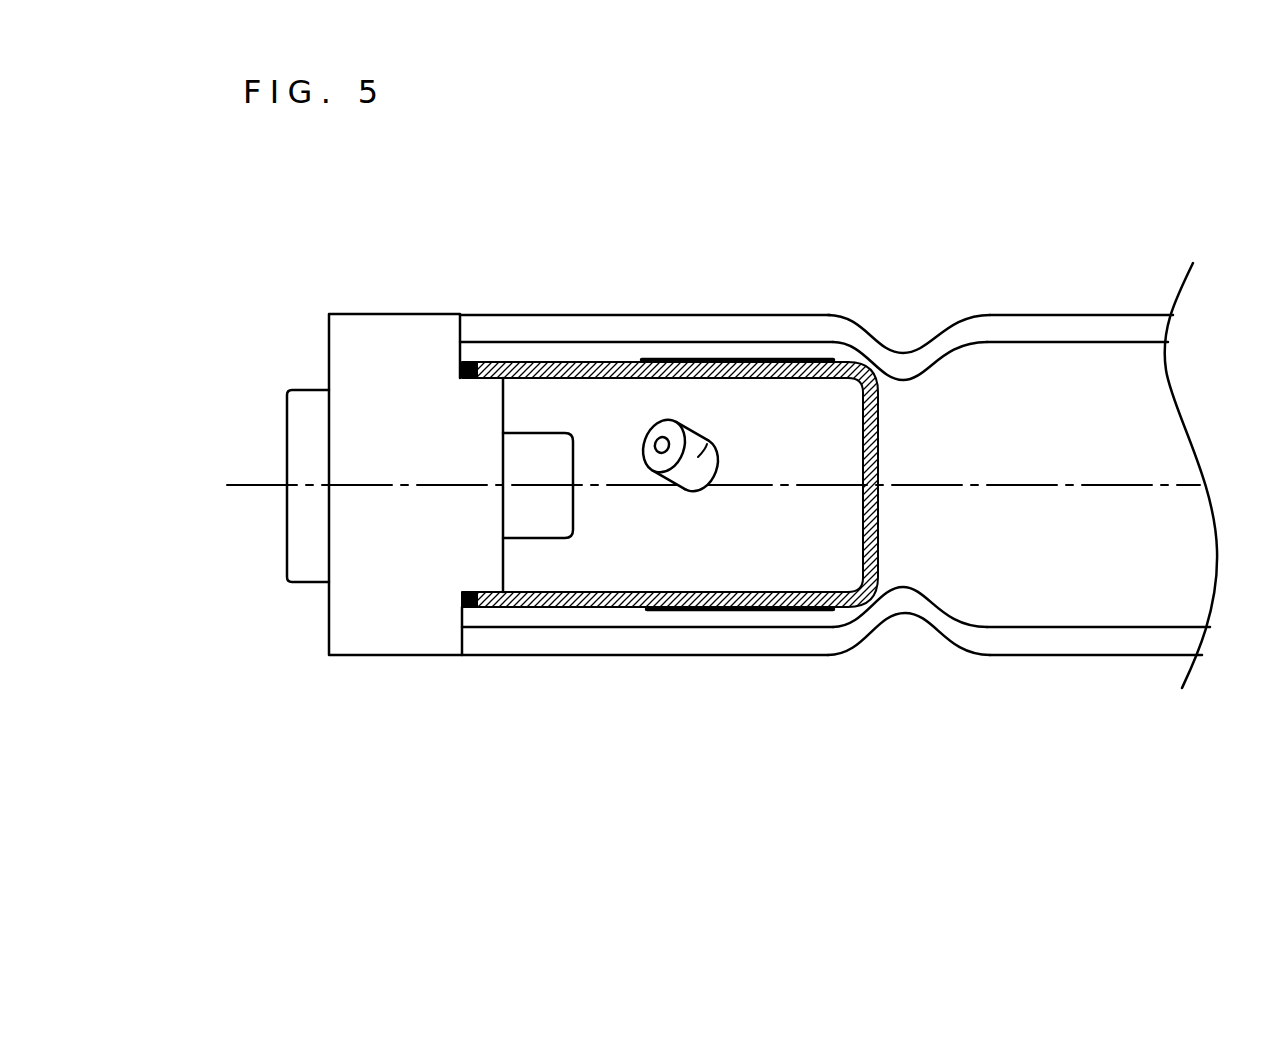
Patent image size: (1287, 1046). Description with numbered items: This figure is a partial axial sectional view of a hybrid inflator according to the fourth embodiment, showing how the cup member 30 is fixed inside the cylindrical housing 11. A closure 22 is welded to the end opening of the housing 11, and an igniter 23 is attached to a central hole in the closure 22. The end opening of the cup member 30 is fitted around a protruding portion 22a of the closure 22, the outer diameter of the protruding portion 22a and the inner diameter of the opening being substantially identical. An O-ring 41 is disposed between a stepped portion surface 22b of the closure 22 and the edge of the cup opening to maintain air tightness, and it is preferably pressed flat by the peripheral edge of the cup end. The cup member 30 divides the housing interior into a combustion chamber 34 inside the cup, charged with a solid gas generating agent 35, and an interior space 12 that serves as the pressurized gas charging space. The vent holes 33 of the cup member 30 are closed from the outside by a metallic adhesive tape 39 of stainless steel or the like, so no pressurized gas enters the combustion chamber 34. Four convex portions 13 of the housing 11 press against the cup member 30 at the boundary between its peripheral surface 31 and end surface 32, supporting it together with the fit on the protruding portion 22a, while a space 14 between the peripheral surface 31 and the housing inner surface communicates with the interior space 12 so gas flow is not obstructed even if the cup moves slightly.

The cylindrical housing 11 is at (1075, 323).
The interior space 12 is at (1152, 593).
The convex portions 13 is at (907, 383).
The space 14 is at (804, 617).
The closure 22 is at (342, 360).
The protruding portion 22a is at (481, 379).
The stepped portion surface 22b is at (457, 353).
The igniter 23 is at (307, 547).
The cup member 30 is at (540, 632).
The peripheral surface 31 is at (627, 610).
The end surface 32 is at (885, 527).
The vent holes 33 is at (741, 612).
The combustion chamber 34 is at (666, 569).
The solid gas generating agent 35 is at (702, 448).
The metallic adhesive tape 39 is at (743, 358).
The O-ring 41 is at (466, 358).